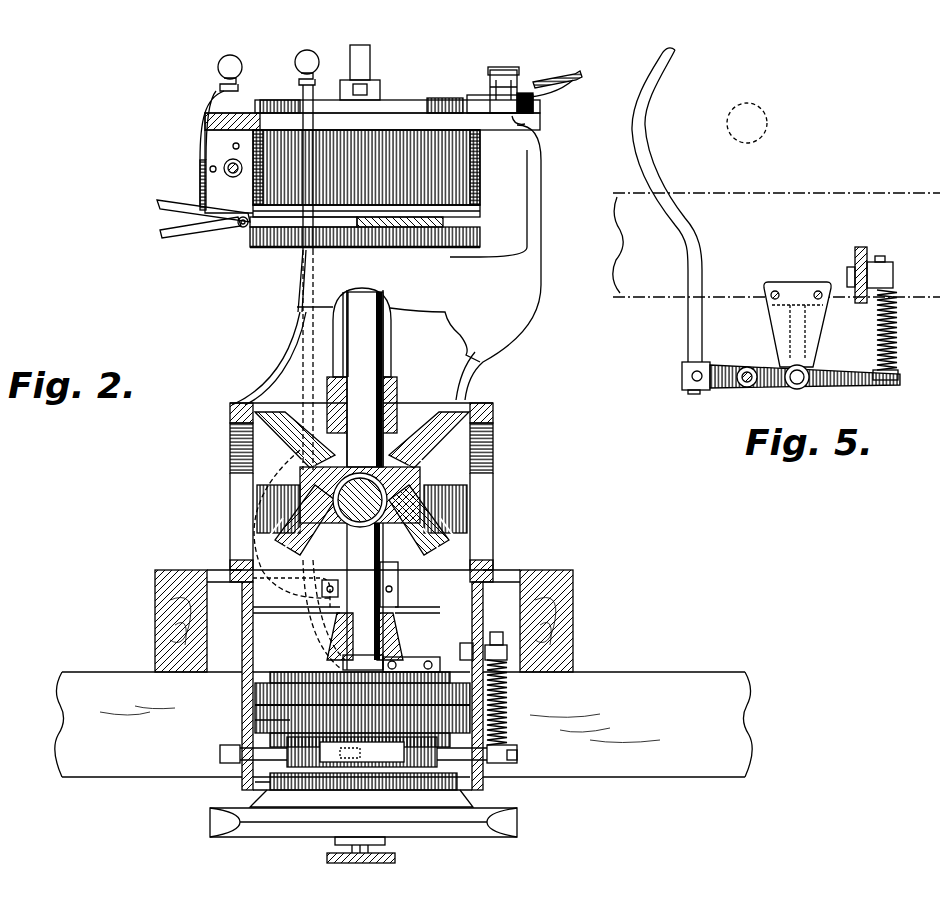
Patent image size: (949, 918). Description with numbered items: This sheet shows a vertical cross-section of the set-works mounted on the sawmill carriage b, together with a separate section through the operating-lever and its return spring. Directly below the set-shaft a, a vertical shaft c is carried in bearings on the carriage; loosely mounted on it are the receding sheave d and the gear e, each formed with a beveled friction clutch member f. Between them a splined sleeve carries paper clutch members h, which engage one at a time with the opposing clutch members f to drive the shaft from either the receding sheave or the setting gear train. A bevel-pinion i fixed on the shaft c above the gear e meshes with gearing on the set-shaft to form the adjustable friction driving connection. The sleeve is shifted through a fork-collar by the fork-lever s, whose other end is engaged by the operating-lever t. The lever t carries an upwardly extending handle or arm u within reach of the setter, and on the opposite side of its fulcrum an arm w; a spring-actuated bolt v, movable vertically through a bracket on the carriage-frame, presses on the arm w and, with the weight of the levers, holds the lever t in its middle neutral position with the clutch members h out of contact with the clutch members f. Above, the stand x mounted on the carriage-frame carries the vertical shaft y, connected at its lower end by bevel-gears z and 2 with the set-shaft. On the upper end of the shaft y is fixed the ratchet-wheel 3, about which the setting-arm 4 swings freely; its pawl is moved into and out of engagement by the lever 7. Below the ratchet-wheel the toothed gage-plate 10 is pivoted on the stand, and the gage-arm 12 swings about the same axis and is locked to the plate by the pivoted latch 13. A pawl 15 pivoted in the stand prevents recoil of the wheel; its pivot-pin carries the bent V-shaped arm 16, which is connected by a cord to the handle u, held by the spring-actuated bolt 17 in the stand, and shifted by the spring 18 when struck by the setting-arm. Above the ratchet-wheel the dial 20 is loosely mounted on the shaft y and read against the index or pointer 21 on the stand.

In FIG. 2, the carriage b is at (403, 724).
In FIG. 2, the clutch member f is at (476, 788).
In FIG. 2, the gear e is at (255, 700).
In FIG. 2, the friction clutch members h is at (255, 720).
In FIG. 2, the fork-lever s is at (243, 742).
In FIG. 5, the fork-lever s is at (745, 385).
In FIG. 2, the sheave d is at (210, 812).
In FIG. 2, the spring-actuated bolt v is at (508, 692).
In FIG. 5, the spring-actuated bolt v is at (896, 318).
In FIG. 2, the arm w is at (519, 753).
In FIG. 5, the arm w is at (848, 372).
In FIG. 2, the bevel-gear z is at (270, 410).
In FIG. 2, the bevel-gear 2 is at (430, 445).
In FIG. 2, the vertical shaft y is at (362, 466).
In FIG. 2, the set-shaft a is at (358, 474).
In FIG. 2, the vertical shaft c is at (397, 600).
In FIG. 2, the bevel-pinion i is at (398, 640).
In FIG. 2, the dial 20 is at (270, 93).
In FIG. 2, the index or pointer 21 is at (437, 98).
In FIG. 2, the pawl 15 is at (481, 166).
In FIG. 2, the ratchet or toothed wheel 3 is at (418, 198).
In FIG. 2, the gage-plate 10 is at (273, 248).
In FIG. 2, the setting-arm 4 is at (226, 171).
In FIG. 2, the lever 7 is at (205, 118).
In FIG. 2, the handle or arm u is at (294, 70).
In FIG. 5, the handle or arm u is at (684, 244).
In FIG. 2, the spring 18 is at (503, 68).
In FIG. 2, the angular or bent arm 16 is at (545, 80).
In FIG. 2, the spring-actuated bolt 17 is at (526, 124).
In FIG. 2, the stand x is at (386, 265).
In FIG. 2, the gage-arm 12 is at (166, 198).
In FIG. 2, the latch 13 is at (182, 237).
In FIG. 5, the operating-lever t is at (770, 363).